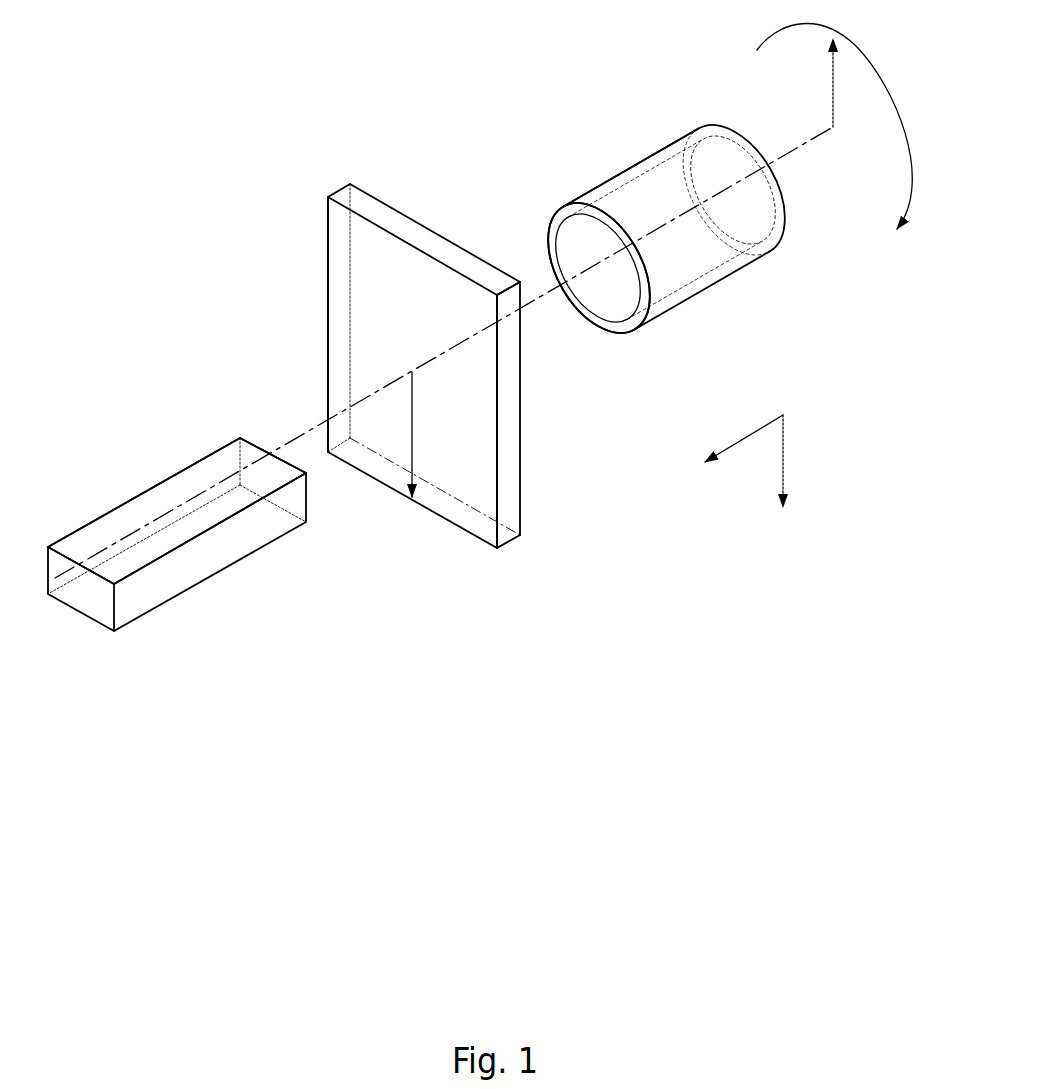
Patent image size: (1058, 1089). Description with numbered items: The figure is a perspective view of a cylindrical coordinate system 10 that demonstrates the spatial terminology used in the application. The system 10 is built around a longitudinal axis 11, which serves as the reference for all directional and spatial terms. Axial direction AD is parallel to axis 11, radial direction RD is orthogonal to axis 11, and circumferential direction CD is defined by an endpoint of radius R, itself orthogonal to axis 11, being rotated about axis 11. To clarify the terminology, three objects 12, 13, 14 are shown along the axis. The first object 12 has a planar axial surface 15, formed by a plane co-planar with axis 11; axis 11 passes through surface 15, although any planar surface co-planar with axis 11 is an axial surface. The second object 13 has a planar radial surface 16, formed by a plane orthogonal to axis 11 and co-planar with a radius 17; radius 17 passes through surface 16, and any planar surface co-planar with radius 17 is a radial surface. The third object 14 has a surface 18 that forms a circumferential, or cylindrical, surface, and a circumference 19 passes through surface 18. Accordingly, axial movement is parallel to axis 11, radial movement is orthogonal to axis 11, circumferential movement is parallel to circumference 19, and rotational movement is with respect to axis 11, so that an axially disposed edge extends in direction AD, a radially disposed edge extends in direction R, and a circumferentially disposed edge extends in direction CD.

The cylindrical coordinate system 10 is at (277, 234).
The longitudinal axis 11 is at (774, 166).
The object 12 is at (141, 619).
The object 13 is at (530, 537).
The object 14 is at (690, 298).
The axial surface 15 is at (137, 512).
The radial surface 16 is at (342, 322).
The radius 17 is at (412, 432).
The circumferential surface 18 is at (628, 167).
The circumference 19 is at (547, 230).
The radius R is at (831, 83).
The circumferential direction CD is at (887, 90).
The axial direction AD is at (747, 435).
The radial direction RD is at (787, 457).